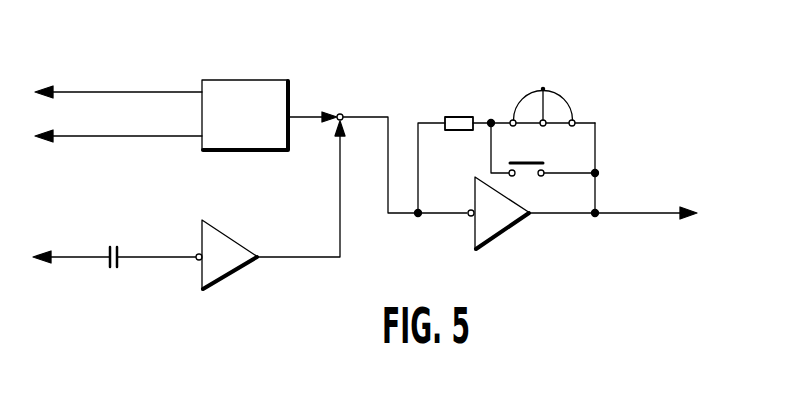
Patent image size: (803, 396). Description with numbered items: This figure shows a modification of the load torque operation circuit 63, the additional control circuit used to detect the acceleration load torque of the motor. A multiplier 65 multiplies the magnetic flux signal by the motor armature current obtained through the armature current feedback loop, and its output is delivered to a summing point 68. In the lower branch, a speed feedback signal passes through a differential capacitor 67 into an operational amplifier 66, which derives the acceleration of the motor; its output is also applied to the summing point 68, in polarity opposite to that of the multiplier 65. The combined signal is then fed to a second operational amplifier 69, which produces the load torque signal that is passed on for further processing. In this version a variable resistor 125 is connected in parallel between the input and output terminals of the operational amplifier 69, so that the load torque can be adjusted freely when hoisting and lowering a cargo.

The control circuit 63 is at (250, 68).
The multiplier 65 is at (289, 104).
The operational amplifier 66 is at (251, 252).
The differential capacitor 67 is at (118, 250).
The summing point 68 is at (341, 114).
The operational amplifier 69 is at (509, 200).
The variable resistor 125 is at (565, 104).